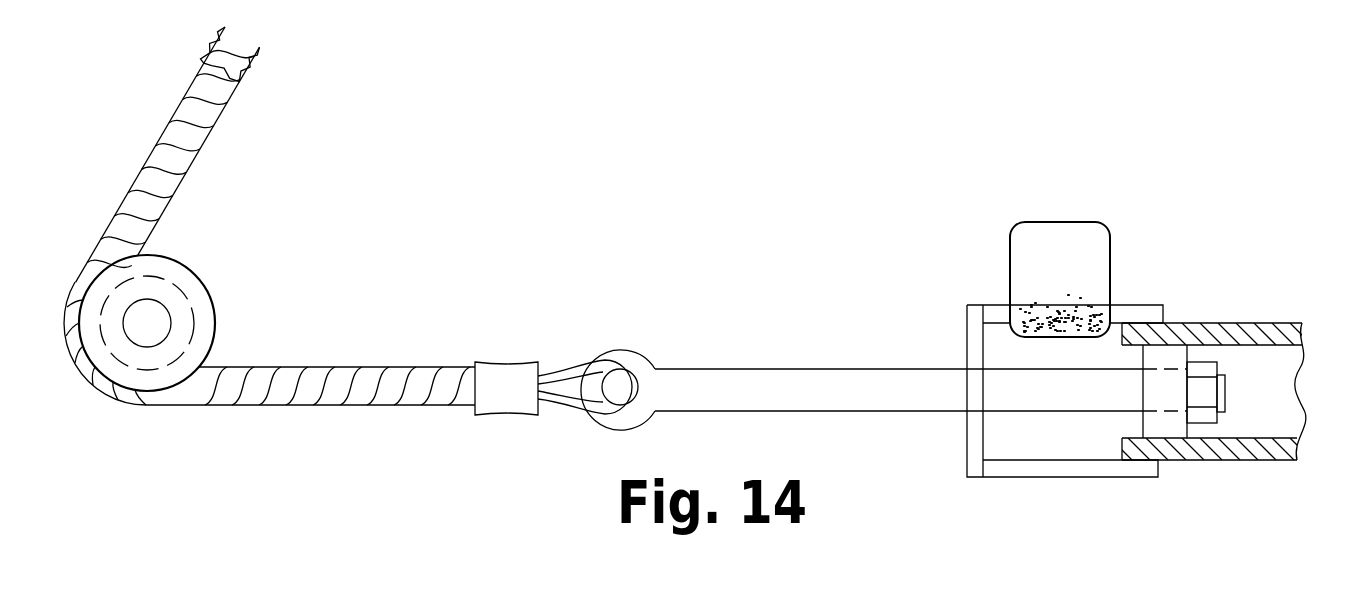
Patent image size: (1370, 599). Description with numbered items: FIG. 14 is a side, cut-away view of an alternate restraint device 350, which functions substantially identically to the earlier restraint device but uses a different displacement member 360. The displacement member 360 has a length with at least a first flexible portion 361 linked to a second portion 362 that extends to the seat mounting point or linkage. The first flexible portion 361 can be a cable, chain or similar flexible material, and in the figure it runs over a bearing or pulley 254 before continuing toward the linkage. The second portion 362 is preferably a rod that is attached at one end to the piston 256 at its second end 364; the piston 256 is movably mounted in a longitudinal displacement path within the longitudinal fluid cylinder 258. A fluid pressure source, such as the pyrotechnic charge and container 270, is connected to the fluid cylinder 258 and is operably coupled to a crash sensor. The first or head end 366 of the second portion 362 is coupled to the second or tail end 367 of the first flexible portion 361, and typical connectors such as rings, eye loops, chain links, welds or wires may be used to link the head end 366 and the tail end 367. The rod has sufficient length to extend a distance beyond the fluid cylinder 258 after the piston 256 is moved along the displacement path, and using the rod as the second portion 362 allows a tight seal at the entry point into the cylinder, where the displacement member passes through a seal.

The restraint device 350 is at (742, 137).
The pulley 254 is at (190, 285).
The displacement member 360 is at (342, 368).
The first flexible portion 361 is at (425, 405).
The tail end 367 is at (513, 368).
The head end 366 is at (630, 358).
The second portion 362 is at (750, 412).
The pyrotechnic charge and container 270 is at (1020, 243).
The piston 256 is at (1162, 422).
The fluid cylinder 258 is at (1255, 412).
The second end 364 is at (1205, 392).